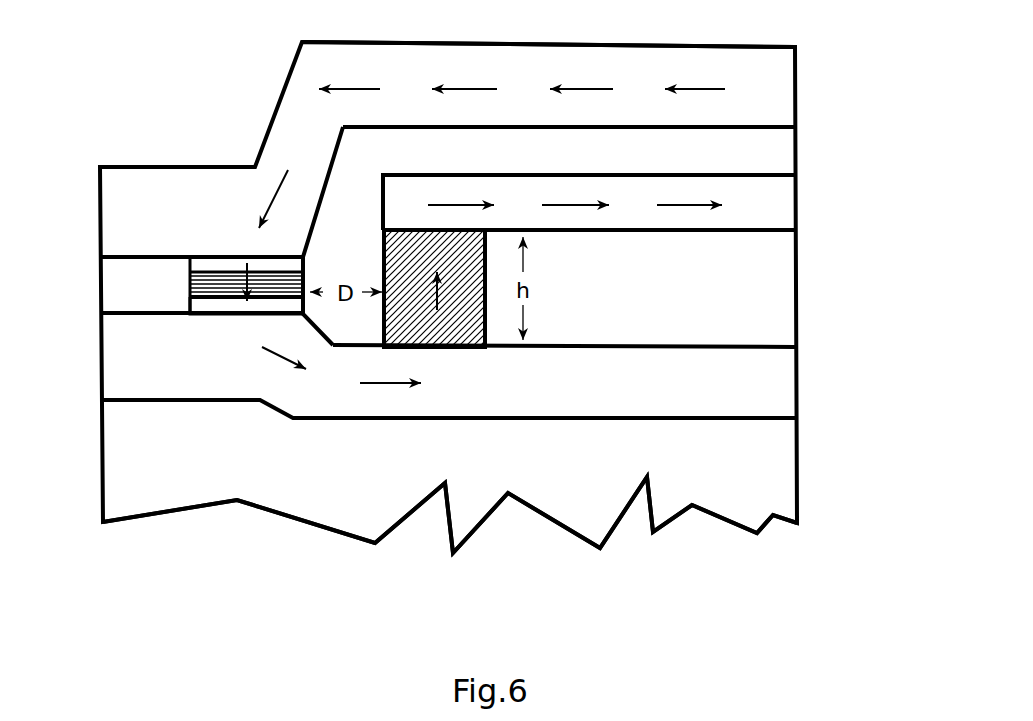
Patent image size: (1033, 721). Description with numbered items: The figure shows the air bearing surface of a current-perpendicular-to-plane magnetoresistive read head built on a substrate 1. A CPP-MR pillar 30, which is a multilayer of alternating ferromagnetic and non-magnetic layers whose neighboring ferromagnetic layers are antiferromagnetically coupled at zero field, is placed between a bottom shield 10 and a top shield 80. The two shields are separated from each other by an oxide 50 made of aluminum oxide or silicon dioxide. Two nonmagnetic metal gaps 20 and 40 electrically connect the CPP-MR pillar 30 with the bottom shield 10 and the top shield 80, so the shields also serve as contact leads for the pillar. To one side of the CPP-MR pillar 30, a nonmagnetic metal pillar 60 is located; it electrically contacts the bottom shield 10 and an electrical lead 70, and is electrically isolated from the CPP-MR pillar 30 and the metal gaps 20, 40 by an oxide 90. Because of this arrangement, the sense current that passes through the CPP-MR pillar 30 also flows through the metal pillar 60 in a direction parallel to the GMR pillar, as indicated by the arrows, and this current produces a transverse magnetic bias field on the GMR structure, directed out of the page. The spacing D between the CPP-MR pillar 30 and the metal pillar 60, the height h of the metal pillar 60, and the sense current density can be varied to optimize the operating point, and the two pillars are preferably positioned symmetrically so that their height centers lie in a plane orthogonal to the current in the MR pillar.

The substrate 1 is at (735, 448).
The bottom shield 10 is at (740, 392).
The nonmagnetic metal gap 20 is at (222, 305).
The CPP-MR pillar 30 is at (258, 290).
The nonmagnetic metal gap 40 is at (222, 265).
The oxide 50 is at (120, 273).
The nonmagnetic metal pillar 60 is at (465, 303).
The electrical lead 70 is at (765, 207).
The top shield 80 is at (758, 63).
The oxide 90 is at (768, 148).